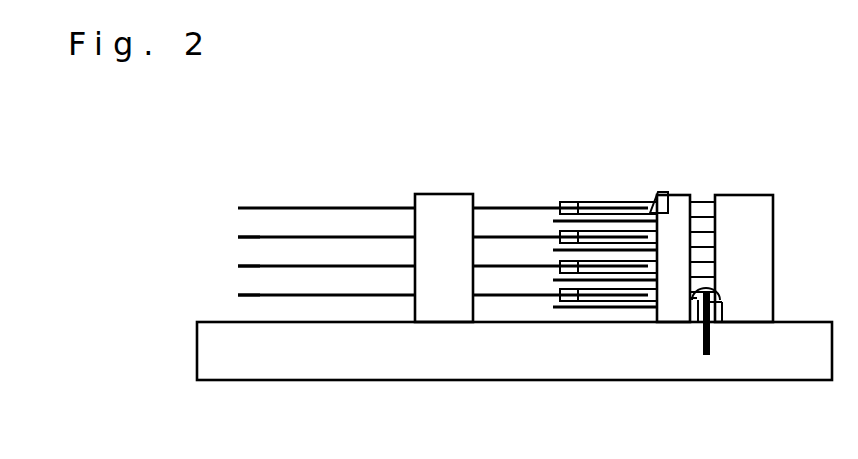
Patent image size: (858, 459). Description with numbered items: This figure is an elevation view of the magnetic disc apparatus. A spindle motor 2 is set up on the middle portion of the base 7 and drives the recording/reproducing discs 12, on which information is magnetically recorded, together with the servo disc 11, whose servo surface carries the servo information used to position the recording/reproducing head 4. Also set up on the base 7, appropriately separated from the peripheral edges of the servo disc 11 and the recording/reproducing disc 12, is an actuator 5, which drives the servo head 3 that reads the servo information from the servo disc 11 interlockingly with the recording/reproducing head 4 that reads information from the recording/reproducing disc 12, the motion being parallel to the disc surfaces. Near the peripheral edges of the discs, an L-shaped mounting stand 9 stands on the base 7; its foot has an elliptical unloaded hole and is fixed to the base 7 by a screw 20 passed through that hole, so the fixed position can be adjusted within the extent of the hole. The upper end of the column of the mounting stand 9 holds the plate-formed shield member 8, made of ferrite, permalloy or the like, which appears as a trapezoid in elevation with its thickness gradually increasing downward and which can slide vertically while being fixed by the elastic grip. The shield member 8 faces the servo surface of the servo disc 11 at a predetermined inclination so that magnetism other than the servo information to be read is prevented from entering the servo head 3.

The spindle motor 2 is at (446, 194).
The servo head 3 is at (572, 203).
The recording/reproducing head 4 is at (556, 307).
The actuator 5 is at (745, 194).
The base 7 is at (640, 382).
The shield member 8 is at (663, 190).
The mounting stand 9 is at (683, 193).
The servo disc 11 is at (272, 207).
The recording/reproducing disc 12 is at (243, 295).
The screw 20 is at (708, 356).